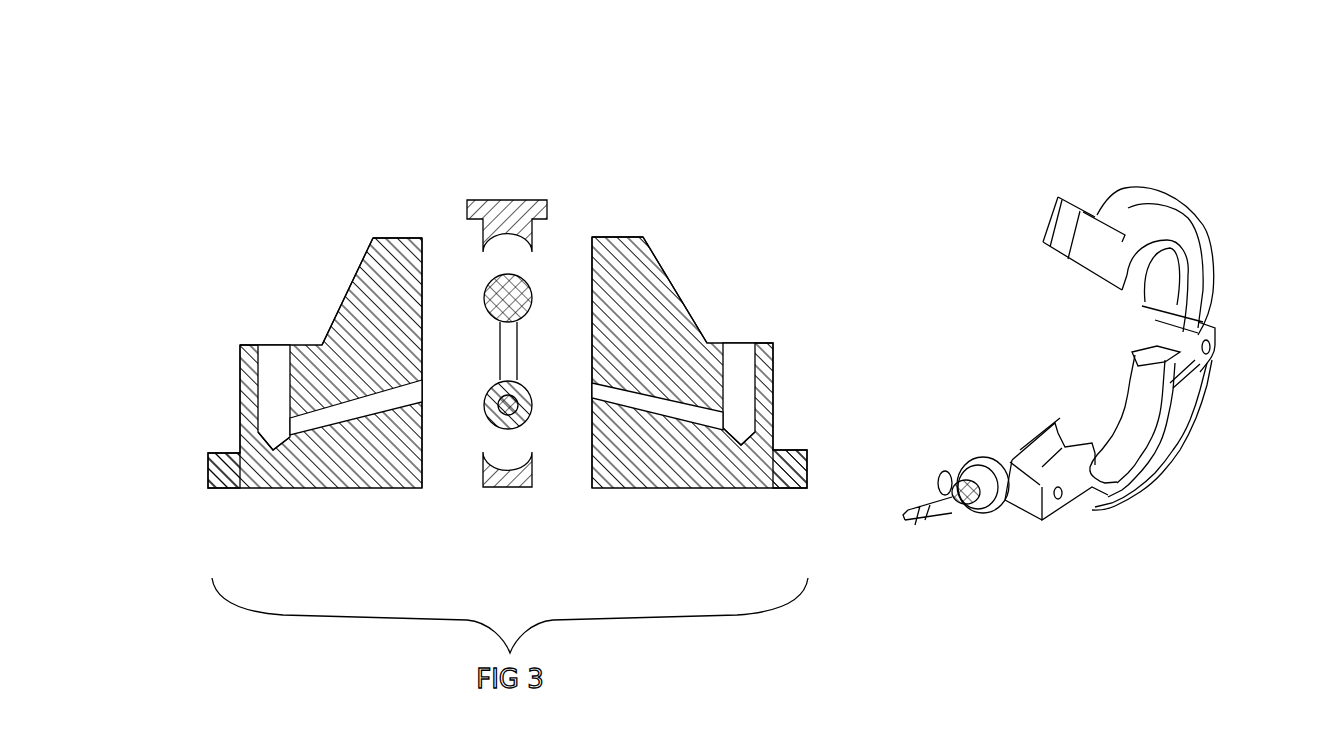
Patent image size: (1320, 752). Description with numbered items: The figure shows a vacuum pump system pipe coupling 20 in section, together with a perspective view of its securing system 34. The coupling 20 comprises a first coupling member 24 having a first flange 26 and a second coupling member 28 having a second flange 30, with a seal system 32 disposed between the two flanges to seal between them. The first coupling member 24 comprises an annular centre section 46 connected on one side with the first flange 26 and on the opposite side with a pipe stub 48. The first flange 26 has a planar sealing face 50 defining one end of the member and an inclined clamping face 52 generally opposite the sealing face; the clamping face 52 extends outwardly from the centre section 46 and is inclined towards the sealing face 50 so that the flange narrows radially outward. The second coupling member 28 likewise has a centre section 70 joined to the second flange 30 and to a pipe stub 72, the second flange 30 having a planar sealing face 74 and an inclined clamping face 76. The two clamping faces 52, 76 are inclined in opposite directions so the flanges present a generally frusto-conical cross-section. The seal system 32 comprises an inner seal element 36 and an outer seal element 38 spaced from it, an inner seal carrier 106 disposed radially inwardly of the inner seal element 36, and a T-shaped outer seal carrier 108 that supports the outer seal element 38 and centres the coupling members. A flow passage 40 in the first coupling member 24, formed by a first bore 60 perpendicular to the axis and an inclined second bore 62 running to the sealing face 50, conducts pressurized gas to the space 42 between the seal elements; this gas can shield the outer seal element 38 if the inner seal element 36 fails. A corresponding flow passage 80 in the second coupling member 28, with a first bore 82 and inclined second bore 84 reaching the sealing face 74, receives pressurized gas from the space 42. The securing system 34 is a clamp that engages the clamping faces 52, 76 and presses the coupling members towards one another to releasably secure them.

In FIG. 3A, the vacuum pump system pipe coupling 20 is at (822, 95).
In FIG. 3A, the first coupling member 24 is at (252, 211).
In FIG. 3A, the first flange 26 is at (382, 244).
In FIG. 3A, the second coupling member 28 is at (800, 360).
In FIG. 3A, the second flange 30 is at (617, 243).
In FIG. 3A, the seal system 32 is at (525, 352).
In FIG. 3B, the securing system 34 is at (1245, 265).
In FIG. 3A, the inner seal element 36 is at (498, 420).
In FIG. 3A, the outer seal element 38 is at (500, 296).
In FIG. 3A, the flow passage 40 is at (275, 330).
In FIG. 3A, the space 42 is at (531, 351).
In FIG. 3A, the annular centre section 46 is at (240, 345).
In FIG. 3A, the pipe stub 48 is at (210, 460).
In FIG. 3A, the planar sealing face 50 is at (423, 262).
In FIG. 3A, the inclined clamping face 52 is at (368, 258).
In FIG. 3A, the first bore 60 is at (273, 445).
In FIG. 3A, the second bore 62 is at (344, 415).
In FIG. 3A, the centre section 70 is at (762, 352).
In FIG. 3A, the pipe stub 72 is at (803, 467).
In FIG. 3A, the planar sealing face 74 is at (592, 260).
In FIG. 3A, the inclined clamping face 76 is at (667, 297).
In FIG. 3A, the flow passage 80 is at (744, 322).
In FIG. 3A, the first bore 82 is at (742, 432).
In FIG. 3A, the second bore 84 is at (682, 418).
In FIG. 3A, the inner seal carrier 106 is at (515, 487).
In FIG. 3A, the outer seal carrier 108 is at (505, 205).